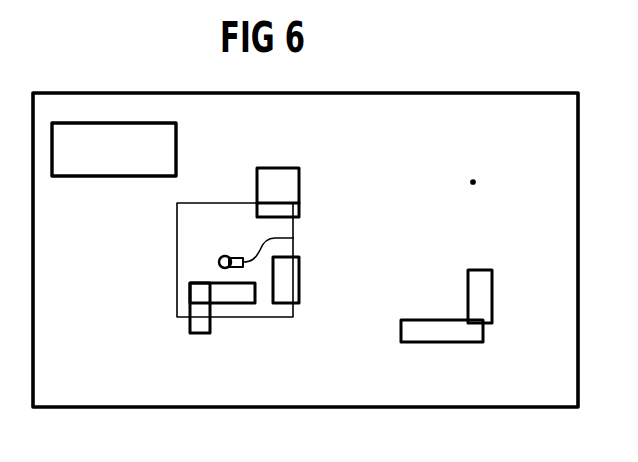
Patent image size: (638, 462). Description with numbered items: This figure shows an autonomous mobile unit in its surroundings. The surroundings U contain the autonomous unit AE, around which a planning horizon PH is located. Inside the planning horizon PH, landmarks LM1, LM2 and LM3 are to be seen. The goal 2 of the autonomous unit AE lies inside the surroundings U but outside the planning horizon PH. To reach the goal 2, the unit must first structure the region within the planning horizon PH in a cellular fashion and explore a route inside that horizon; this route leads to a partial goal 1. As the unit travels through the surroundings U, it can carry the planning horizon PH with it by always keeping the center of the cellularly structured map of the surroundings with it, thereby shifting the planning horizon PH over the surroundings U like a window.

The surroundings U is at (578, 180).
The planning horizon PH is at (177, 268).
The autonomous unit AE is at (220, 259).
The landmark LM1 is at (245, 300).
The landmark LM2 is at (282, 287).
The landmark LM3 is at (293, 183).
The partial goal 1 is at (293, 238).
The goal 2 is at (475, 178).